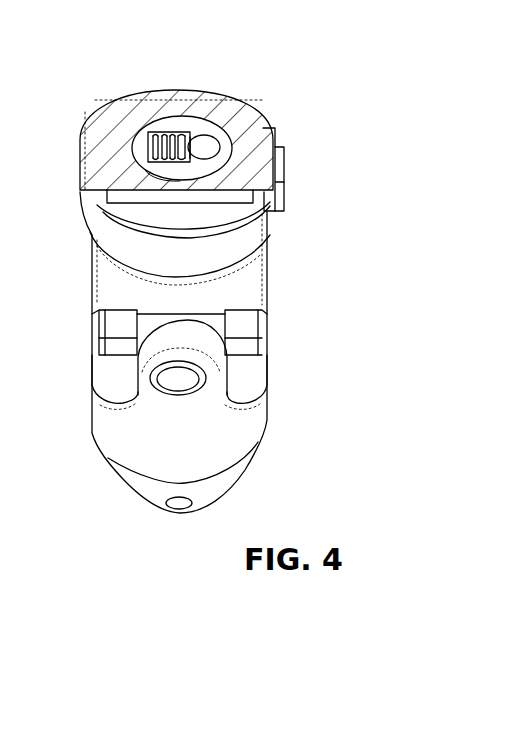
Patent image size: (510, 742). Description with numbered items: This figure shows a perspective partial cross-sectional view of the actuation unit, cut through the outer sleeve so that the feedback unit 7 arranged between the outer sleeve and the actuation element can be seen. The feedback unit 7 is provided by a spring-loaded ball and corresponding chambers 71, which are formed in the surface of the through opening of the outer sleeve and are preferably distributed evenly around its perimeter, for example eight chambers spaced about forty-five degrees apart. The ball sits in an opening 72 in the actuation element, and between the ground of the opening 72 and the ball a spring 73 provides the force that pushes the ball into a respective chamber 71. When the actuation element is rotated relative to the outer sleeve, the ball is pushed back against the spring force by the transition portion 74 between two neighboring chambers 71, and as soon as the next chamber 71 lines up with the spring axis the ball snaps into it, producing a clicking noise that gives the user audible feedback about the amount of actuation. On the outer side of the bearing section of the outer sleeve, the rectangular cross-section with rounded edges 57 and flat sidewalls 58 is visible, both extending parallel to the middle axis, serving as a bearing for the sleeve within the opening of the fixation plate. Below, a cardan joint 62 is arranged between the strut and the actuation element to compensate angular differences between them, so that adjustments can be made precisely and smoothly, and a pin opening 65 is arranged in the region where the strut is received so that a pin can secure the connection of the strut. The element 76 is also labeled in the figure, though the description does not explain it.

The cap 71 is at (195, 128).
The ribbed element 76 is at (196, 138).
The oval opening end 74 is at (214, 137).
The oval member 7 is at (206, 138).
The cap portion 73 is at (150, 150).
The inner element 72 is at (181, 165).
The tab 57 is at (253, 197).
The plate 58 is at (188, 201).
The body 62 is at (235, 441).
The bottom marking 65 is at (182, 498).